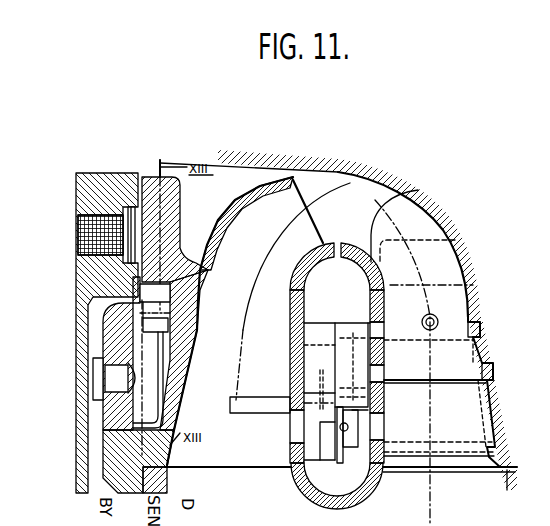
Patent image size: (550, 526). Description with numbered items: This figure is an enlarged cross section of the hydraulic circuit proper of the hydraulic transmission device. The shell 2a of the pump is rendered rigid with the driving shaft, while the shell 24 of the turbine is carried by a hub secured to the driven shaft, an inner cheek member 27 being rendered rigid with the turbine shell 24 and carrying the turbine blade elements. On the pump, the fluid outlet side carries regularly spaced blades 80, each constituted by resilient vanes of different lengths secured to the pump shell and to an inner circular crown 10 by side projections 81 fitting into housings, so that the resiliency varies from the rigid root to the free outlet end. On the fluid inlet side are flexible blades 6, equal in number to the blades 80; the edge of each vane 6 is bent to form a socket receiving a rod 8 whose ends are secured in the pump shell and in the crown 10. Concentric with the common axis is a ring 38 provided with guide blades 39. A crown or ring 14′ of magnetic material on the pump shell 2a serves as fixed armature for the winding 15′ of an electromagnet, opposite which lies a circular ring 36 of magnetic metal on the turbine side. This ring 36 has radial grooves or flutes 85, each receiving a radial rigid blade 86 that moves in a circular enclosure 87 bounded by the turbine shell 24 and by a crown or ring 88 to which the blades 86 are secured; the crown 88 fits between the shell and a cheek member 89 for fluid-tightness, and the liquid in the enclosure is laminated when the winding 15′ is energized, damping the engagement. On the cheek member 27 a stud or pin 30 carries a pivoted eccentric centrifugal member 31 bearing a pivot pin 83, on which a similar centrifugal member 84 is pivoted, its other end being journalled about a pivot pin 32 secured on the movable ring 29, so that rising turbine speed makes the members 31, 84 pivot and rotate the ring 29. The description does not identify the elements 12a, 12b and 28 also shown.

The shell of the pump 2a is at (273, 156).
The flexible blade 6 is at (463, 417).
The rod 8 is at (518, 478).
The inner circular crown 10 is at (380, 277).
The housing part 12a is at (401, 354).
The housing tube part 12b is at (232, 480).
The crown or ring of magnetic material 14′ is at (113, 248).
The winding of an electromagnet 15′ is at (187, 268).
The shell of the turbine 24 is at (203, 257).
The inner cheek member 27 is at (300, 253).
The plate 28 is at (257, 413).
The movable ring 29 is at (295, 447).
The stud or pin 30 is at (303, 368).
The eccentric centrifugal member 31 is at (358, 400).
The pivot pin 32 is at (303, 440).
The circular ring of magnetic metal 36 is at (173, 195).
The ring carrying guide blades 38 is at (502, 483).
The guide blades 39 is at (200, 487).
The blade 80 is at (407, 208).
The side projections 81 is at (376, 372).
The pivot pin 83 is at (348, 430).
The centrifugal member 84 is at (320, 337).
The radial grooves or flutes 85 is at (173, 290).
The radial rigid blade 86 is at (160, 360).
The circular enclosure 87 is at (168, 385).
The crown or ring 88 is at (168, 328).
The cheek member 89 is at (114, 478).